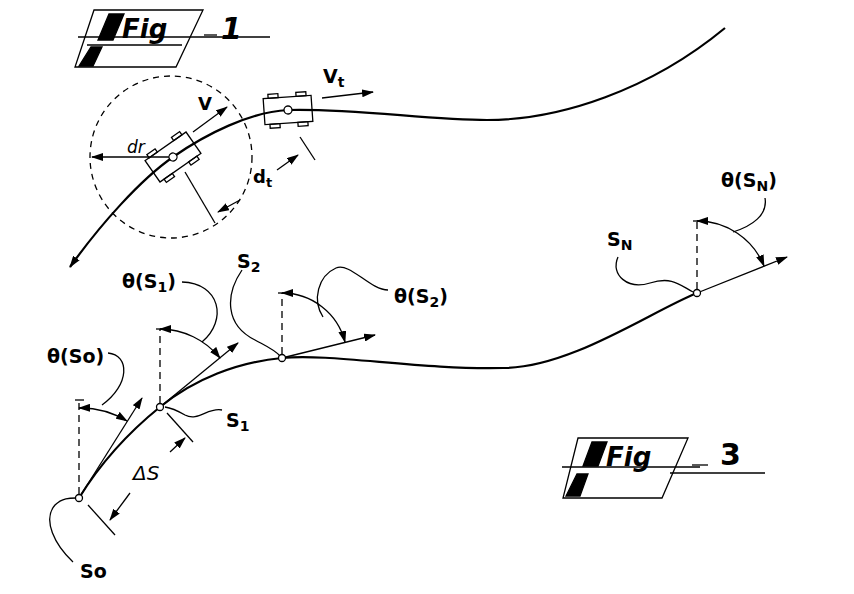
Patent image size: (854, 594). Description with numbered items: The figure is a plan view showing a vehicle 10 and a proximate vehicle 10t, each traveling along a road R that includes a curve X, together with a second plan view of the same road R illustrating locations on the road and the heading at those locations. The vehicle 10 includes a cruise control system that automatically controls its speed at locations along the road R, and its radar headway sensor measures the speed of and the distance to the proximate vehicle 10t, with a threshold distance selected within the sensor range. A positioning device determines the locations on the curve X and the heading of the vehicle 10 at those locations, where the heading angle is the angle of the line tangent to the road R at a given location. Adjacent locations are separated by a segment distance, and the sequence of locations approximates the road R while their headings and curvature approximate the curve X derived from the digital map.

In FIG. 1, the vehicle 10 is at (166, 125).
In FIG. 1, the proximate vehicle 10t is at (287, 80).
In FIG. 1, the road R is at (475, 120).
In FIG. 3, the road R is at (533, 368).
In FIG. 3, the curve X is at (527, 293).